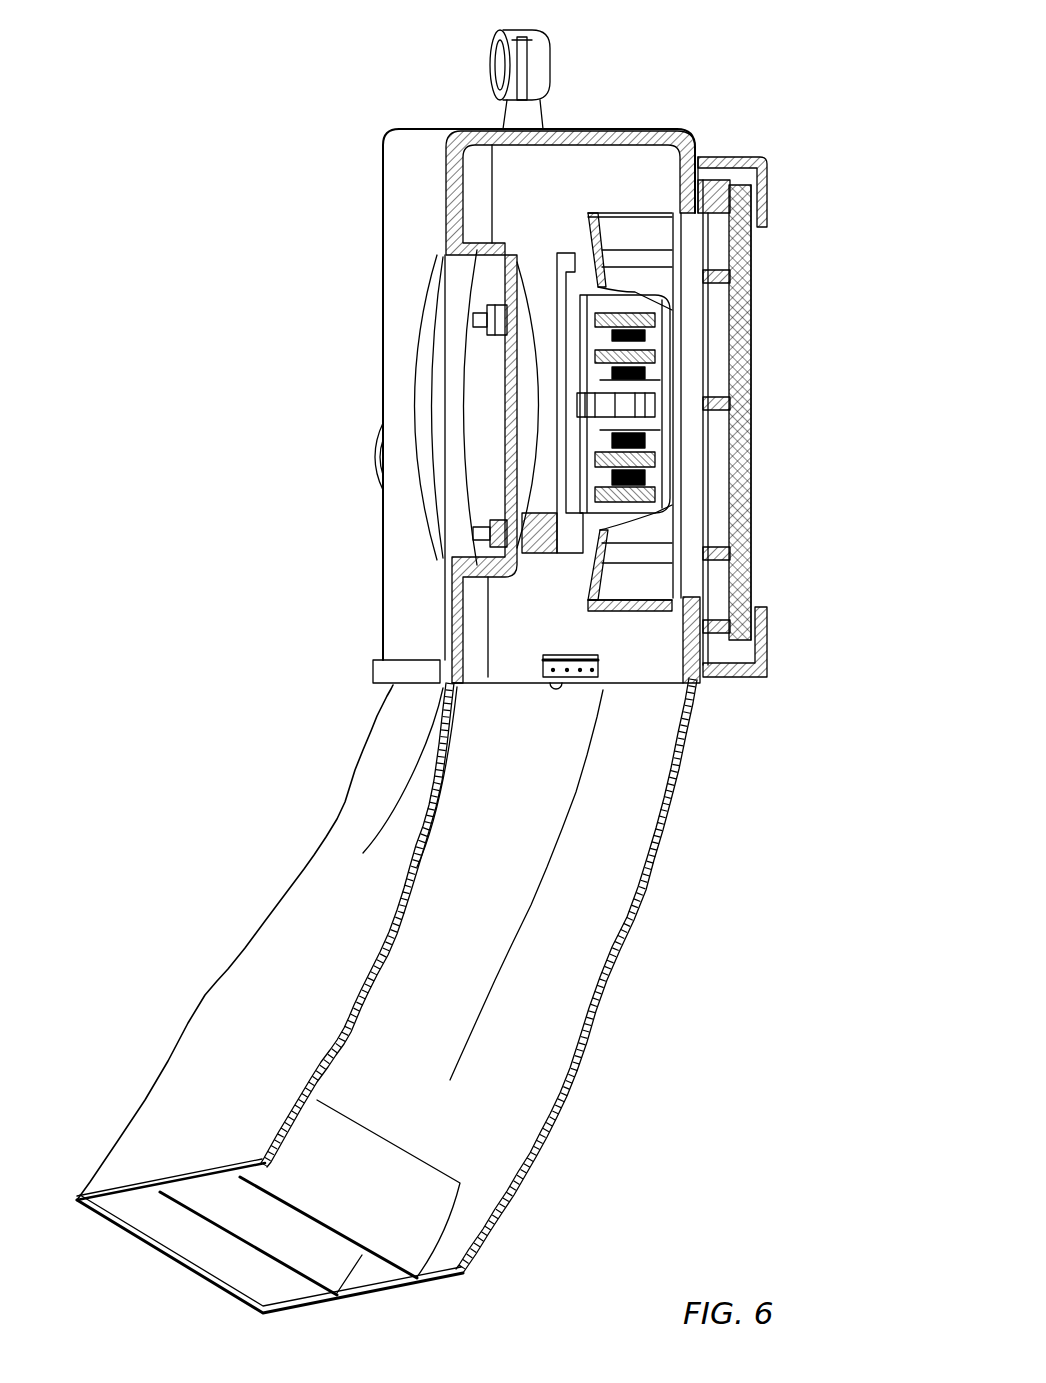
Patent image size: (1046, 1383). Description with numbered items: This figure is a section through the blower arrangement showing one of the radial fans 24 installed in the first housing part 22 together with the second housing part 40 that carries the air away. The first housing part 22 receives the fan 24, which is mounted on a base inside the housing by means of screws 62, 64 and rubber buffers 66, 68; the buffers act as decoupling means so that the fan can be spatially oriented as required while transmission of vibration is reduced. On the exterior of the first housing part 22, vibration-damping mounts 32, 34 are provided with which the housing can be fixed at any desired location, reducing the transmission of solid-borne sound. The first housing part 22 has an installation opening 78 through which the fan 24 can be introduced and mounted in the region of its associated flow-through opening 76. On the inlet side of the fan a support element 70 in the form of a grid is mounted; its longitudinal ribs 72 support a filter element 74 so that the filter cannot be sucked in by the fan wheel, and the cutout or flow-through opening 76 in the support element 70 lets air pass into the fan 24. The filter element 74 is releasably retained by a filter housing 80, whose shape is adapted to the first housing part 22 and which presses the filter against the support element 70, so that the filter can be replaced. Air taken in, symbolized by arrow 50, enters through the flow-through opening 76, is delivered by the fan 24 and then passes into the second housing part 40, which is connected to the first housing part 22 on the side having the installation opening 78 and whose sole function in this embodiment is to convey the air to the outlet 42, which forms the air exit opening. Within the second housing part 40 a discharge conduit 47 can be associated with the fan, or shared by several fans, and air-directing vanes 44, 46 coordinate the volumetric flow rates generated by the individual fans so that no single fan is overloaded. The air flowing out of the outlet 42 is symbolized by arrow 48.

The first housing part 22 is at (686, 142).
The radial fan 24 is at (633, 198).
The vibration-damping mount 32 is at (543, 33).
The vibration-damping mount 34 is at (372, 450).
The second housing part 40 is at (620, 955).
The outlet 42 is at (208, 1210).
The air-directing vane 44 is at (187, 1191).
The air-directing vane 46 is at (307, 1118).
The discharge conduit 47 is at (548, 1042).
The arrows for outflowing air 48 is at (84, 1255).
The arrows for intake air 50 is at (768, 258).
The screw 62 is at (473, 526).
The screw 64 is at (473, 318).
The rubber buffer 66 is at (533, 507).
The rubber buffer 68 is at (540, 290).
The support element 70 is at (720, 190).
The longitudinal rib 72 is at (751, 335).
The filter element 74 is at (751, 485).
The flow-through opening 76 is at (703, 603).
The installation opening 78 is at (527, 662).
The filter housing 80 is at (767, 196).